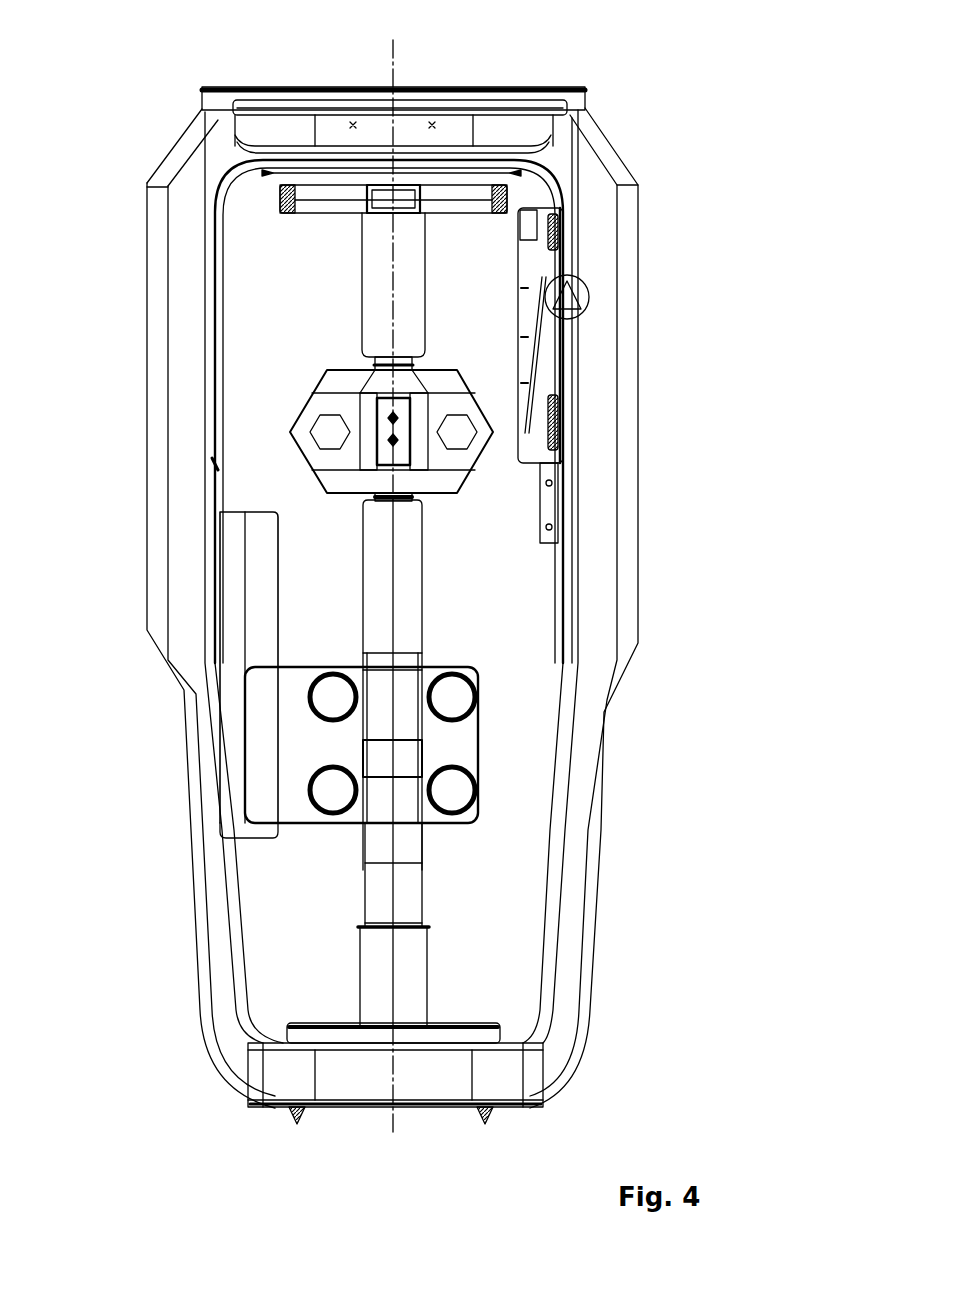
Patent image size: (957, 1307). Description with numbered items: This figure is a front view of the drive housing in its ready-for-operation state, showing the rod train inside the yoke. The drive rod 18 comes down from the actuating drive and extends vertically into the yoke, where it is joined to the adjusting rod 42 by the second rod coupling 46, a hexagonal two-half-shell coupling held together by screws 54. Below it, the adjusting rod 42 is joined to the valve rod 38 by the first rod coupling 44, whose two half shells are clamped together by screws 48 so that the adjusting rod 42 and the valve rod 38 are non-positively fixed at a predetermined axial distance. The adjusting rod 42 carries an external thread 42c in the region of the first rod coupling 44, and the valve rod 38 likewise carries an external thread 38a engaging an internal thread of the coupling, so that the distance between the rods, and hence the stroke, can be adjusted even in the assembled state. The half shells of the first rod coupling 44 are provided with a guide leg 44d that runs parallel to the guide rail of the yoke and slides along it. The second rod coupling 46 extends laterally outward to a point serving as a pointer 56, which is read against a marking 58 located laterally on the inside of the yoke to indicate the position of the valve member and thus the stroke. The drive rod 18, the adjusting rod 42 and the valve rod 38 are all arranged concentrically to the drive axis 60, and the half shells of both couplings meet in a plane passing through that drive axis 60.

The drive rod 18 is at (410, 258).
The valve rod 38 is at (428, 905).
The external thread 38a is at (424, 840).
The adjusting rod 42 is at (405, 580).
The external thread 42c is at (425, 655).
The first rod coupling 44 is at (480, 755).
The guide leg 44d is at (243, 835).
The second rod coupling 46 is at (318, 383).
The screws 48 is at (455, 697).
The screws 54 is at (460, 432).
The pointer 56 is at (522, 443).
The marking 58 is at (580, 274).
The drive axis 60 is at (393, 48).